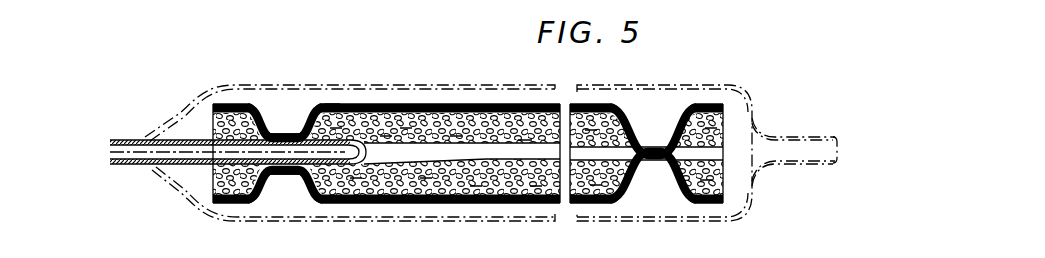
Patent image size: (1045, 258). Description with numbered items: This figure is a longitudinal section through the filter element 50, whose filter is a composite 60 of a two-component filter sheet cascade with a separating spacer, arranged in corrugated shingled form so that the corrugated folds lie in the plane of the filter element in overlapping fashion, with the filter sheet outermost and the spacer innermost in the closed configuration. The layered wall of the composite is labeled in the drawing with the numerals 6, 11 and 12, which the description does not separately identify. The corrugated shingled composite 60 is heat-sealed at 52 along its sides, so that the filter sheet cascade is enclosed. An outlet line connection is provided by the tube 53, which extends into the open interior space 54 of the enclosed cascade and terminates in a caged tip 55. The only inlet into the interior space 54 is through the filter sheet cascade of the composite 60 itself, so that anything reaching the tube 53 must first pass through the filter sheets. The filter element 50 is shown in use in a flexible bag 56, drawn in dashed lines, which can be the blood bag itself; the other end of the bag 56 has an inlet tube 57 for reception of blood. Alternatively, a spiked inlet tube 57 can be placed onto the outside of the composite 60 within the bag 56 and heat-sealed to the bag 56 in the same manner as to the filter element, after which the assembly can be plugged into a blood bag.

The outer layer 6 is at (416, 105).
The intermediate foam layer 11 is at (471, 108).
The inner layer 12 is at (532, 127).
The filter element 50 is at (363, 105).
The heat seal 52 is at (281, 134).
The tube 53 is at (124, 139).
The interior space 54 is at (488, 150).
The caged tip 55 is at (363, 160).
The bag 56 is at (217, 222).
The inlet tube 57 is at (808, 150).
The composite 60 is at (320, 106).